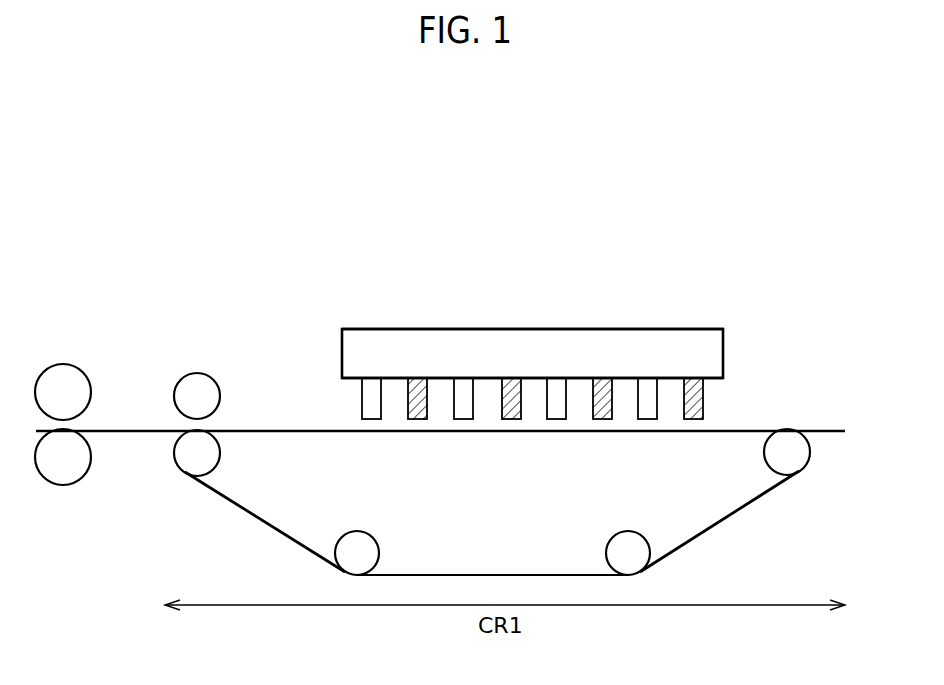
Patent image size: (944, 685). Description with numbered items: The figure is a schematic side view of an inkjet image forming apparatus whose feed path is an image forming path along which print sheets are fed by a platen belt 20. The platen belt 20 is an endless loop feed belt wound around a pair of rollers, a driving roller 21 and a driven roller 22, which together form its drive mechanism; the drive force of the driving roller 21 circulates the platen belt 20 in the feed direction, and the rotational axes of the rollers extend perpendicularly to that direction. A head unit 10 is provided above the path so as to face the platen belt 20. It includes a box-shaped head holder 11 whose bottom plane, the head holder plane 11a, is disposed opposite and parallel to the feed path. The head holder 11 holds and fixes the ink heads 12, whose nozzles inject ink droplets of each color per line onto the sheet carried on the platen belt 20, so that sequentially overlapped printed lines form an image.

The head unit 10 is at (412, 329).
The head holder 11 is at (348, 352).
The nozzle surface 11a is at (343, 382).
The ink heads 12 is at (720, 424).
The platen belt 20 is at (715, 526).
The driving roller 21 is at (187, 465).
The driven roller 22 is at (798, 461).